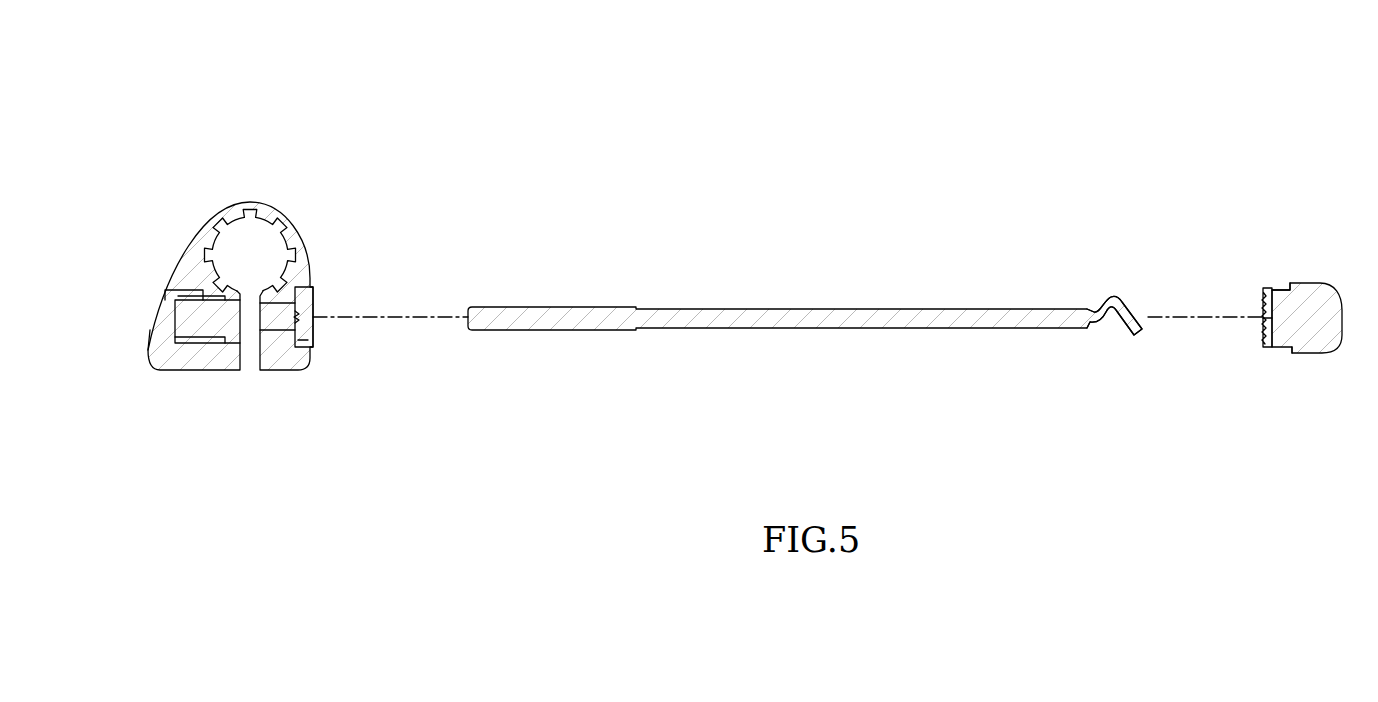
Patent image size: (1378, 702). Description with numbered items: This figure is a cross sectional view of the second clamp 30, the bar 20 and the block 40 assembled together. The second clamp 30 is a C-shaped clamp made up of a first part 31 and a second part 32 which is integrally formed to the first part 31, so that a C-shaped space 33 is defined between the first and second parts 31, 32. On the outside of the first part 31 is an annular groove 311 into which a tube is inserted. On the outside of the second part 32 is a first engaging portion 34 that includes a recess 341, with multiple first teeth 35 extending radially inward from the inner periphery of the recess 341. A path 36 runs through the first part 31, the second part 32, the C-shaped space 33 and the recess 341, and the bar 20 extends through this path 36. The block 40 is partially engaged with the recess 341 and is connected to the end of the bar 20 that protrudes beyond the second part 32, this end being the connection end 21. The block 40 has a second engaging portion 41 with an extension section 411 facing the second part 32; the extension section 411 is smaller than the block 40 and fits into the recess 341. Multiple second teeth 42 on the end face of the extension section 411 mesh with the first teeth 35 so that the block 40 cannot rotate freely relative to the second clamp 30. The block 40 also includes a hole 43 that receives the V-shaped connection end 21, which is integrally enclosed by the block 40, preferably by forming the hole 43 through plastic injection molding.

The bar 20 is at (770, 316).
The connection end 21 is at (1118, 298).
The second clamp 30 is at (250, 188).
The first part 31 is at (208, 362).
The annular groove 311 is at (185, 297).
The second part 32 is at (273, 362).
The C-shaped space 33 is at (272, 236).
The first engaging portion 34 is at (313, 303).
The recess 341 is at (306, 340).
The first teeth 35 is at (312, 322).
The path 36 is at (183, 322).
The block 40 is at (1318, 293).
The second engaging portion 41 is at (1272, 283).
The extension section 411 is at (1284, 350).
The second teeth 42 is at (1264, 291).
The hole 43 is at (1263, 319).